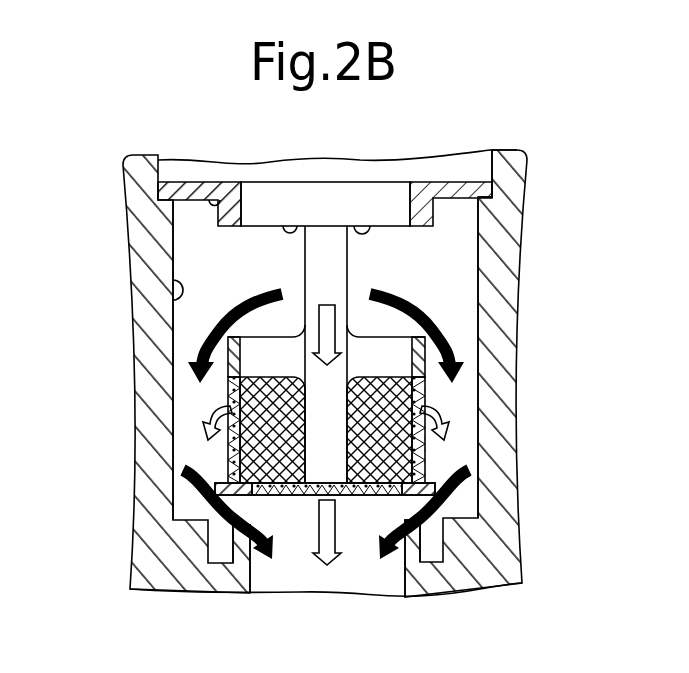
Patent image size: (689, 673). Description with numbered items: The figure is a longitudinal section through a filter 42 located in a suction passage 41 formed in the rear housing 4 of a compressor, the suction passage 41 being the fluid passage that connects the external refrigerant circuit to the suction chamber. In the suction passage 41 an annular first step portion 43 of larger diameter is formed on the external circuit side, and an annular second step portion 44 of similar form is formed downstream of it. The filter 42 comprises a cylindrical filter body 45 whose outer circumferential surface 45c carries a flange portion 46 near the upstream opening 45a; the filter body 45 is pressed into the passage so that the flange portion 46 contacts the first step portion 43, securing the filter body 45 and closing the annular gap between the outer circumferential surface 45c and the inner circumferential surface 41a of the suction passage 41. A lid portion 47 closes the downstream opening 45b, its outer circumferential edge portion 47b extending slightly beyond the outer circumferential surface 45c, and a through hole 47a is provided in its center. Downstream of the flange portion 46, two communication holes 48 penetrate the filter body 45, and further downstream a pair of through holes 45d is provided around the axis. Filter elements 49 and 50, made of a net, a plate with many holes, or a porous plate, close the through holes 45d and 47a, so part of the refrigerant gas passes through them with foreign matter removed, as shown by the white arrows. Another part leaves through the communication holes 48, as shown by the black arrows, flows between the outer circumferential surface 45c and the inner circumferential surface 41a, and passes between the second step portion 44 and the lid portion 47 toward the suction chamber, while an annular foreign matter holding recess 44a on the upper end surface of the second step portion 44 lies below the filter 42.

The rear housing 4 is at (510, 322).
The suction passage 41 is at (463, 258).
The inner circumferential surface 41a is at (173, 282).
The filter 42 is at (222, 383).
The first step portion 43 is at (503, 184).
The second step portion 44 is at (432, 522).
The foreign matter holding recess 44a is at (222, 555).
The filter body 45 is at (425, 362).
The opening 45a is at (404, 183).
The opening 45b is at (425, 456).
The outer circumferential surface 45c is at (218, 200).
The through holes 45d is at (305, 335).
The flange portion 46 is at (178, 192).
The lid portion 47 is at (220, 452).
The through hole 47a is at (378, 497).
The outer circumferential edge portion 47b is at (215, 487).
The communication holes 48 is at (356, 220).
The filter element 49 is at (226, 391).
The filter element 50 is at (292, 497).